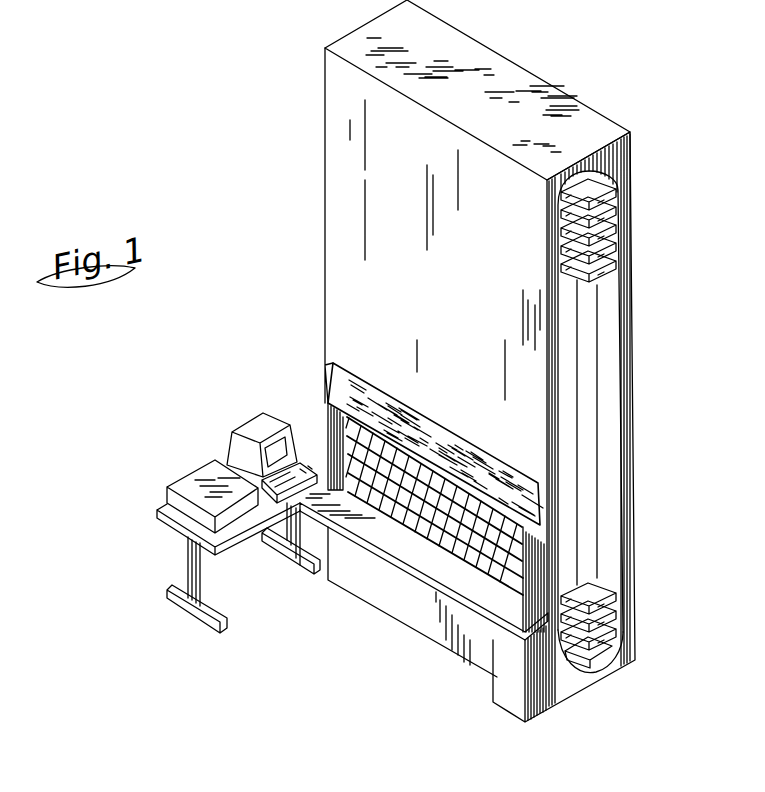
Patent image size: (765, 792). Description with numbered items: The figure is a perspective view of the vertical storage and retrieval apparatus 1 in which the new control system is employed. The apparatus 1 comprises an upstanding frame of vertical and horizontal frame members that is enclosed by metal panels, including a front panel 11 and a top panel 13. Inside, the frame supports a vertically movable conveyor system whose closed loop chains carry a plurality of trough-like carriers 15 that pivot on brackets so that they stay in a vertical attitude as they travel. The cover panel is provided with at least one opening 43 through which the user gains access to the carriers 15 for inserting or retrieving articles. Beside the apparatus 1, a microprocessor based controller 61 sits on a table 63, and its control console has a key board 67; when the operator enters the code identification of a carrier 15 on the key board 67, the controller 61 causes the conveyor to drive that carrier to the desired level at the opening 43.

The vertical storage and retrieval apparatus 1 is at (605, 102).
The front panel 11 is at (350, 203).
The top panel 13 is at (527, 88).
The carriers 15 is at (606, 230).
The opening 43 is at (428, 485).
The controller 61 is at (190, 483).
The table 63 is at (192, 607).
The key board 67 is at (257, 443).